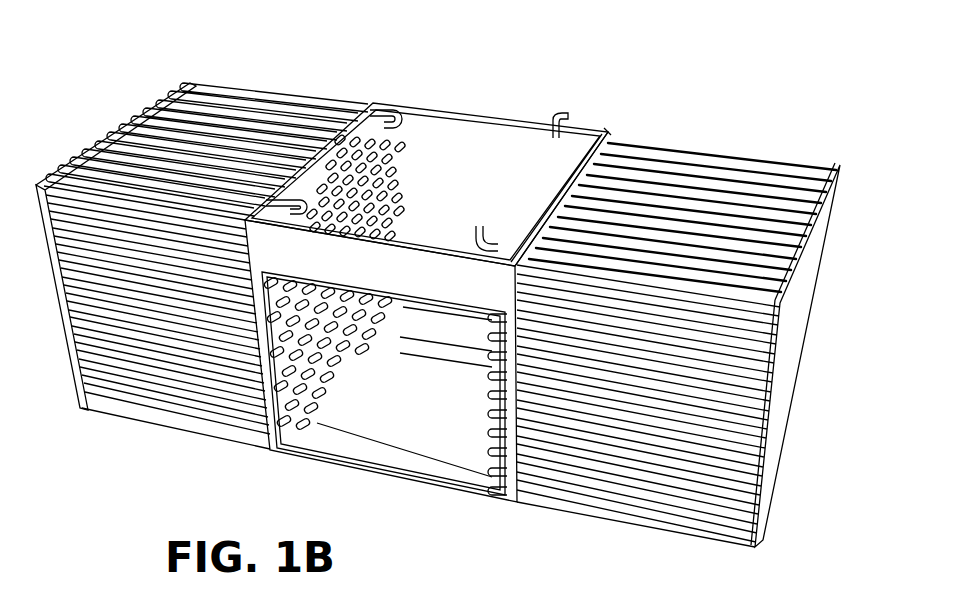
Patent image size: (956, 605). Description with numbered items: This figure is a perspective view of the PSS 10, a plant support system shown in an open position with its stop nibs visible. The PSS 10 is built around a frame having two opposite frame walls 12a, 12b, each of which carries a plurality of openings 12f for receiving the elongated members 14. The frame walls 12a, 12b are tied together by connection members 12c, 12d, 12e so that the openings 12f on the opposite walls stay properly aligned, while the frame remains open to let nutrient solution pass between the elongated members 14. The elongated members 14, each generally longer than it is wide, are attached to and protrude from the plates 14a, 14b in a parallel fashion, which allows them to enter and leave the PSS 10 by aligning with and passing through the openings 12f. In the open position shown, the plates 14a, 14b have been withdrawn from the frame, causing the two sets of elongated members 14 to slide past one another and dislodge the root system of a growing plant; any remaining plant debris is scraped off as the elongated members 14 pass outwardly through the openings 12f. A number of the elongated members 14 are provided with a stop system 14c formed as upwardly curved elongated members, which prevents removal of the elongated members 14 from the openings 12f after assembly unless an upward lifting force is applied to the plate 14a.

The PSS 10 is at (705, 99).
The frame wall 12a is at (352, 103).
The frame wall 12b is at (600, 134).
The connection member 12c is at (484, 153).
The connection member 12d is at (404, 281).
The connection member 12e is at (398, 458).
The openings 12f is at (455, 342).
The elongated members 14 is at (375, 125).
The plate 14a is at (790, 418).
The plate 14b is at (130, 140).
The stop system 14c is at (560, 118).